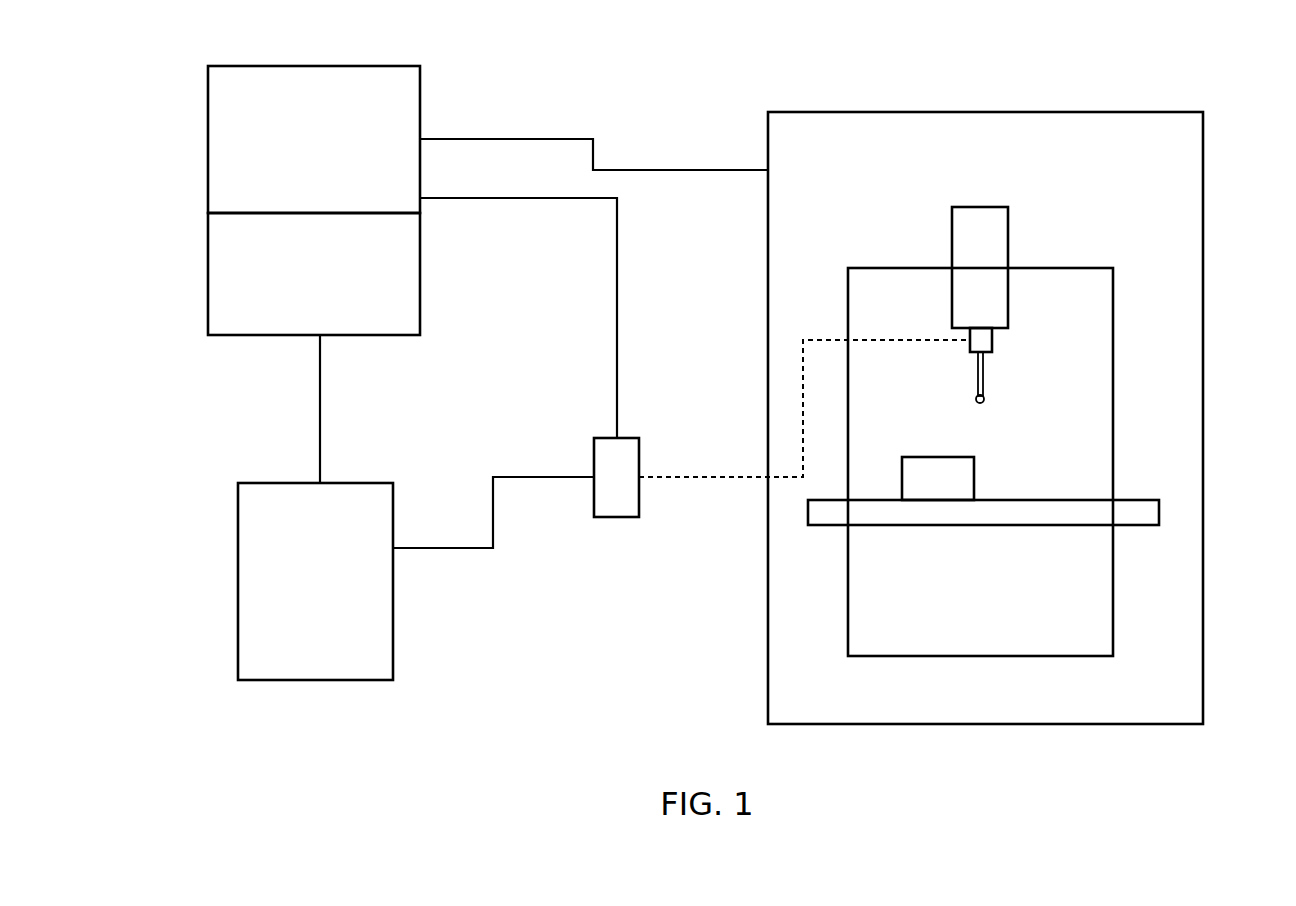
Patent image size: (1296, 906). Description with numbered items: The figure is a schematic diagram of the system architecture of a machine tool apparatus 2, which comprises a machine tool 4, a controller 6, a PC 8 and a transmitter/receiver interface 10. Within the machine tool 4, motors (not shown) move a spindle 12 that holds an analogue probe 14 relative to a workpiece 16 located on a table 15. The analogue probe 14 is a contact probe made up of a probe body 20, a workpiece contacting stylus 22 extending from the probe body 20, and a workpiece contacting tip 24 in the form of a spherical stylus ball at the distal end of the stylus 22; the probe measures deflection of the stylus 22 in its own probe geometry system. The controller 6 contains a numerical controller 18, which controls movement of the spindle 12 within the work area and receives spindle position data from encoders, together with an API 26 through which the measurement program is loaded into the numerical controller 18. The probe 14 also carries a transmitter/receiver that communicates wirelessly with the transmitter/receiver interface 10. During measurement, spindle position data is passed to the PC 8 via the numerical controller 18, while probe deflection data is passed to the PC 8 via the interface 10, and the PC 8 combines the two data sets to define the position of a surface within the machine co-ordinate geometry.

The machine tool apparatus 2 is at (748, 41).
The machine tool 4 is at (1010, 112).
The controller 6 is at (132, 192).
The PC 8 is at (238, 588).
The transmitter/receiver interface 10 is at (617, 517).
The spindle 12 is at (965, 276).
The analogue probe 14 is at (1023, 396).
The table 15 is at (1150, 512).
The workpiece 16 is at (923, 492).
The numerical controller (NC) 18 is at (208, 134).
The probe body 20 is at (985, 349).
The stylus 22 is at (983, 380).
The workpiece contacting tip 24 is at (986, 400).
The API 26 is at (208, 286).